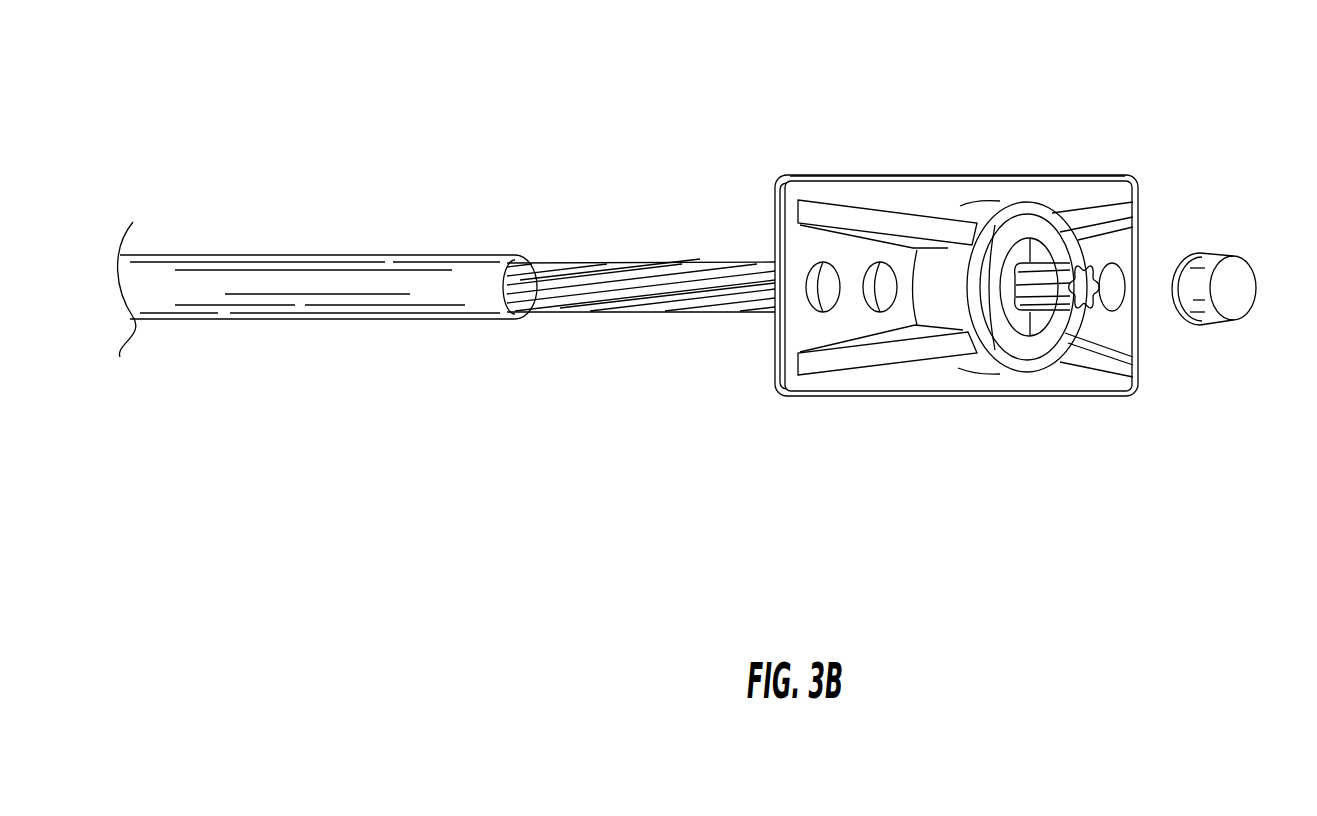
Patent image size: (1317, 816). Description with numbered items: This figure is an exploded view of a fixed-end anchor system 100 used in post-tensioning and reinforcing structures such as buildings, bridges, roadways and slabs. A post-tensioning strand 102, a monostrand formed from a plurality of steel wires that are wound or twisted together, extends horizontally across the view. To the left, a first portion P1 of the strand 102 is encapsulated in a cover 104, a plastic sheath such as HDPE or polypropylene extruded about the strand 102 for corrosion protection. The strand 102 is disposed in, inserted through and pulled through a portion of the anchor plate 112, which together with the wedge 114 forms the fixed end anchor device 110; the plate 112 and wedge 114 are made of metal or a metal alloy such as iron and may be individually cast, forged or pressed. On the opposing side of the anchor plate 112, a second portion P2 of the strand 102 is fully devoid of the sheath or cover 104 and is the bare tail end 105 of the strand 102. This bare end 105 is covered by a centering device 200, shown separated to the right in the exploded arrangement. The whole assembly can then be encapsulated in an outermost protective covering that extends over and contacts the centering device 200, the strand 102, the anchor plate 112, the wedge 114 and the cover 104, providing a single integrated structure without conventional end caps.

The anchor system 100 is at (435, 85).
The post-tensioning strand 102 is at (618, 313).
The cover 104 is at (330, 320).
The end 105 is at (1098, 283).
The anchor device 110 is at (810, 413).
The anchor plate 112 is at (908, 185).
The wedge 114 is at (1043, 320).
The centering device 200 is at (1220, 256).
The first portion P1 is at (483, 370).
The second portion P2 is at (1110, 322).